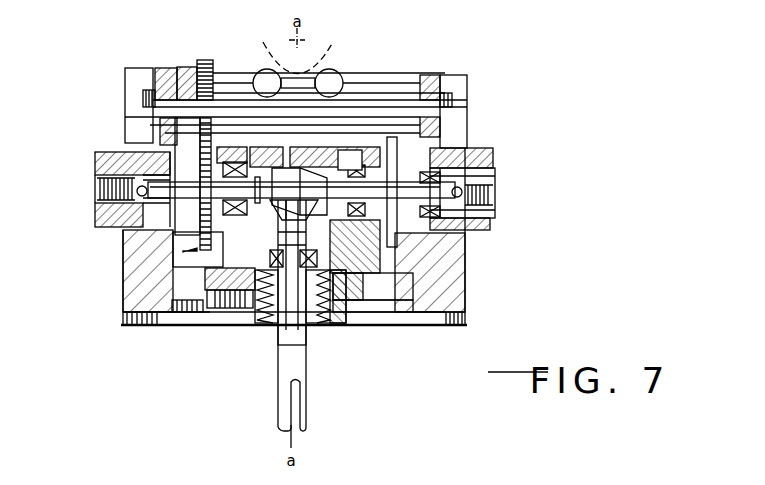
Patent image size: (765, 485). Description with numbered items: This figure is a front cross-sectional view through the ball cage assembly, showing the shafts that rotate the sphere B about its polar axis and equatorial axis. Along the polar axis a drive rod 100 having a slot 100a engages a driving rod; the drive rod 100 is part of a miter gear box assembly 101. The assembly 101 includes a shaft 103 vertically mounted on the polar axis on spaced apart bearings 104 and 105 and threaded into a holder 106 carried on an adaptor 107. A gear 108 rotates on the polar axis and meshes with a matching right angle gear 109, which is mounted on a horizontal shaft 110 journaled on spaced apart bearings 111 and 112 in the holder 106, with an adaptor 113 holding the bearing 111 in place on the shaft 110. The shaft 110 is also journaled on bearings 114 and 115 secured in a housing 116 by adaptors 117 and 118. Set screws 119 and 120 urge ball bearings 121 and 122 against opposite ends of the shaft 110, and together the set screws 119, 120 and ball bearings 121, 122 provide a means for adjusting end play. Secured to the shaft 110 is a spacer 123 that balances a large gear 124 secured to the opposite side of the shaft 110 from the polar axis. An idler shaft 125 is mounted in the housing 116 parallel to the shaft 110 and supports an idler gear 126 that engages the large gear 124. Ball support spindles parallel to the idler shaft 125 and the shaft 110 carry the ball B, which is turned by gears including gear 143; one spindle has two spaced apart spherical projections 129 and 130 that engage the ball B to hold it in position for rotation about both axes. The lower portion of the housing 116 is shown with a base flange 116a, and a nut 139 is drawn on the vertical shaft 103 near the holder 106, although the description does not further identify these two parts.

The drive rod 100 is at (297, 353).
The slot 100a is at (293, 410).
The miter gear box assembly 101 is at (175, 257).
The shaft 103 is at (279, 330).
The bearing 104 is at (347, 275).
The bearing 105 is at (345, 313).
The holder 106 is at (162, 308).
The adaptor 107 is at (274, 328).
The gear 108 is at (268, 195).
The right angle gear 109 is at (326, 175).
The shaft 110 is at (325, 178).
The bearing 111 is at (217, 272).
The bearing 112 is at (362, 162).
The adaptor 113 is at (213, 157).
The bearing 114 is at (433, 160).
The bearing 115 is at (170, 175).
The housing 116 is at (448, 258).
The base flange 116a is at (405, 307).
The adaptor 117 is at (487, 173).
The adaptor 118 is at (100, 215).
The set screw 119 is at (100, 192).
The set screw 120 is at (495, 188).
The ball bearing 121 is at (130, 250).
The ball bearing 122 is at (478, 214).
The spacer 123 is at (398, 165).
The large gear 124 is at (200, 100).
The idler shaft 125 is at (228, 110).
The idler gear 126 is at (207, 98).
The spherical projection 129 is at (258, 67).
The spherical projection 130 is at (338, 69).
The nut 139 is at (232, 292).
The gear 143 is at (203, 60).
The sphere B is at (333, 42).